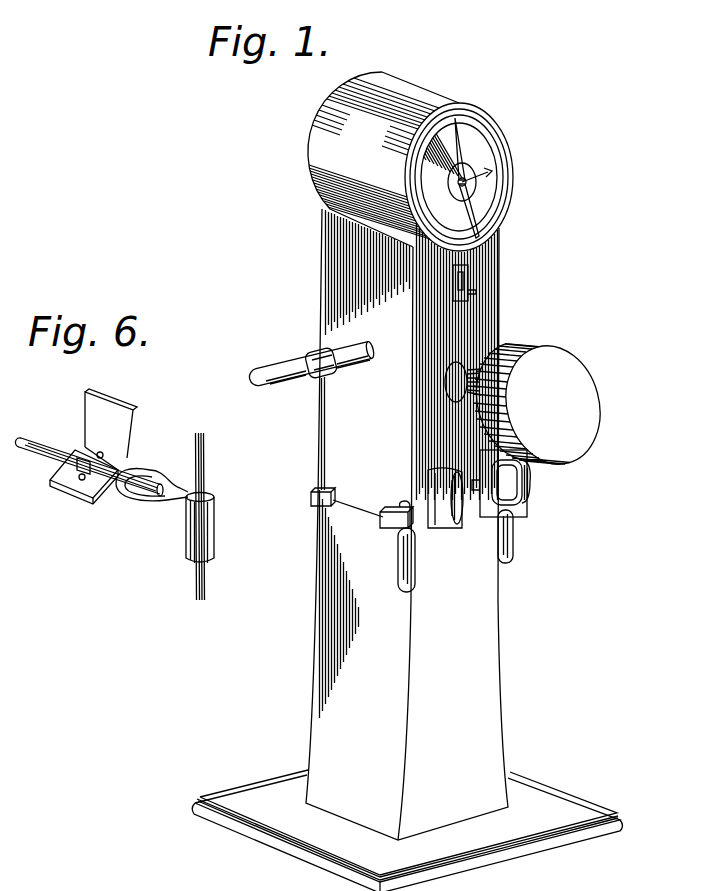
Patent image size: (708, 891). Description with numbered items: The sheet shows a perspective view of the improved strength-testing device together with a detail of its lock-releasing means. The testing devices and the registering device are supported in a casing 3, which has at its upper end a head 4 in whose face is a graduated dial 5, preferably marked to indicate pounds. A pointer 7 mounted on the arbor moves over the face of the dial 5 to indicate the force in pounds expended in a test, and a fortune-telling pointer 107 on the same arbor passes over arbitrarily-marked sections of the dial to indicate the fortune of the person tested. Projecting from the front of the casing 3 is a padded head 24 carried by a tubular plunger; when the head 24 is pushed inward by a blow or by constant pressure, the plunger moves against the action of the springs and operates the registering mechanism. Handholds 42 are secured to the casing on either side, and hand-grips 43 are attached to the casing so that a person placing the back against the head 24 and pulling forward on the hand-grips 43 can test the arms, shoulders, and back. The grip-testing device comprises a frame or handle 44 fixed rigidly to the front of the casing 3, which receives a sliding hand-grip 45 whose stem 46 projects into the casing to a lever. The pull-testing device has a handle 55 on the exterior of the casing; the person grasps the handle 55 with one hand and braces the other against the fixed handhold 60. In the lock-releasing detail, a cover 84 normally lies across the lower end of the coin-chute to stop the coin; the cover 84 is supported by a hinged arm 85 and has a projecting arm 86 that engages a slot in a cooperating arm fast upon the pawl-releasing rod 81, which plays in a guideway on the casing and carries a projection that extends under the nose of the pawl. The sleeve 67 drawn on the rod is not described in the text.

In FIG. 1, the casing 3 is at (332, 603).
In FIG. 1, the head 4 is at (413, 92).
In FIG. 1, the graduated dial 5 is at (480, 148).
In FIG. 1, the pointer 7 is at (456, 150).
In FIG. 1, the fortune-telling pointer 107 is at (490, 182).
In FIG. 1, the padded head 24 is at (578, 368).
In FIG. 1, the handholds 42 is at (275, 390).
In FIG. 1, the fixed handhold 60 is at (330, 352).
In FIG. 1, the handle 55 is at (453, 490).
In FIG. 1, the frame or handle 44 is at (527, 488).
In FIG. 1, the hand-grip 45 is at (512, 498).
In FIG. 1, the stem 46 is at (488, 486).
In FIG. 1, the hand-grips 43 is at (500, 557).
In FIG. 6, the cover or stop 84 is at (70, 494).
In FIG. 6, the arm 85 is at (133, 417).
In FIG. 6, the arm 86 is at (140, 500).
In FIG. 6, the sleeve 67 is at (182, 512).
In FIG. 6, the pawl-releasing rod 81 is at (197, 580).